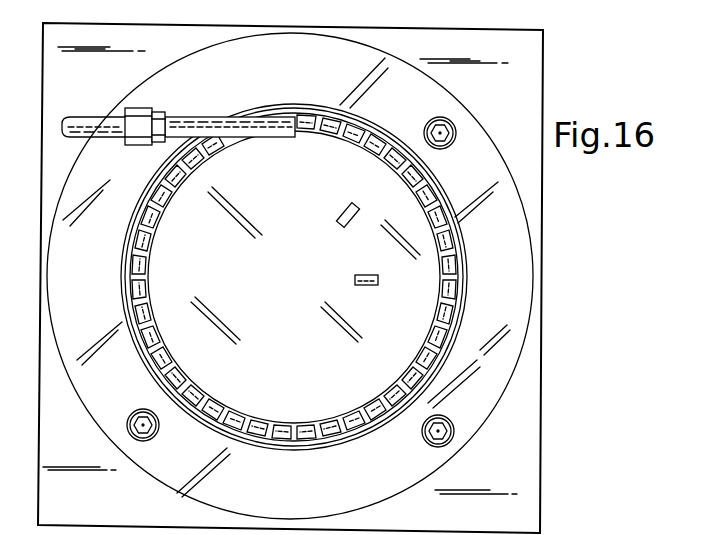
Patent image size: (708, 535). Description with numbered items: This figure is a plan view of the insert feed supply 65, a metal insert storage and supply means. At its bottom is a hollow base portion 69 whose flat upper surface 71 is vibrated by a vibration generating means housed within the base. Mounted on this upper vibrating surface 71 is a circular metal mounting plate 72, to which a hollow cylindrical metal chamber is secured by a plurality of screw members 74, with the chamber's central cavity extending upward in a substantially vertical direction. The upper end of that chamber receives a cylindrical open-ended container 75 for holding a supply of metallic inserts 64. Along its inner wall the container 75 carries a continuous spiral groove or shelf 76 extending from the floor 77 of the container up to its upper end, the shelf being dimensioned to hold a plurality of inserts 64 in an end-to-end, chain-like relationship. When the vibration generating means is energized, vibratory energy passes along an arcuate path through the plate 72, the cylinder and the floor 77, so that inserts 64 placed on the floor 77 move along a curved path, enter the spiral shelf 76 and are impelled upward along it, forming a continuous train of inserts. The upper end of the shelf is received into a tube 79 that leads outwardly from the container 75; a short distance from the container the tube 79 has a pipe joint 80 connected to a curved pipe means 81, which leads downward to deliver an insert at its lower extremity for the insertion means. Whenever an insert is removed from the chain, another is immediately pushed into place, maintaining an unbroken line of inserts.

The metallic inserts 64 is at (356, 278).
The insert feed supply 65 is at (336, 276).
The hollow base portion 69 is at (545, 470).
The flat upper surface 71 is at (520, 417).
The circular metal mounting plate 72 is at (474, 145).
The screw members 74 is at (432, 120).
The cylindrical open-ended container 75 is at (450, 308).
The continuous spiral groove or shelf 76 is at (435, 303).
The floor of the container 77 is at (289, 326).
The tube 79 is at (208, 117).
The pipe joint 80 is at (145, 117).
The curved pipe means 81 is at (93, 123).